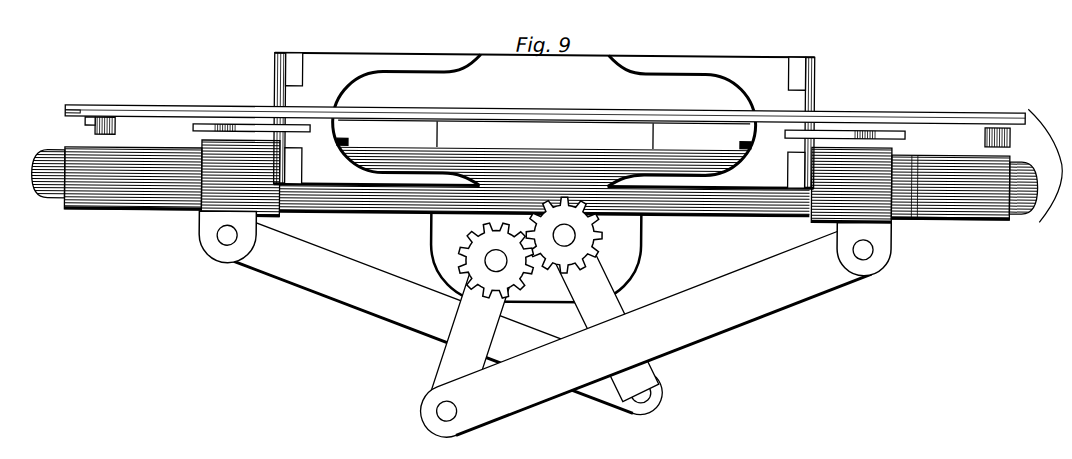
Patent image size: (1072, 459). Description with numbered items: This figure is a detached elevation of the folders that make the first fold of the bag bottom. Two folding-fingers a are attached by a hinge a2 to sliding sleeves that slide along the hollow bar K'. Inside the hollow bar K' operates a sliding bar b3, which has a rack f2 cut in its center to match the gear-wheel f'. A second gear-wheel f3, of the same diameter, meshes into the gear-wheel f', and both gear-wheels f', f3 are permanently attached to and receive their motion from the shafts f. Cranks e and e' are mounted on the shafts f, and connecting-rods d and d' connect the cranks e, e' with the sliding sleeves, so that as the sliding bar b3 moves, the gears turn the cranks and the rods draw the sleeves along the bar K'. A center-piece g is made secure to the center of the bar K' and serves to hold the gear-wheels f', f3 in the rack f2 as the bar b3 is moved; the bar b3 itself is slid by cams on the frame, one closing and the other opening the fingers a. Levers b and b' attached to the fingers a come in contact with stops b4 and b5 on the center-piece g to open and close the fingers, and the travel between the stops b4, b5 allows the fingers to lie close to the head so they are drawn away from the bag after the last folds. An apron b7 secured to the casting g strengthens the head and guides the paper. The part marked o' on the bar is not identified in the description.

The folding-fingers a is at (544, 121).
The hinge a2 is at (547, 109).
The lever b is at (252, 99).
The lever b' is at (845, 103).
The sliding bar b3 is at (534, 161).
The stop b4 is at (563, 135).
The stop b5 is at (225, 125).
The apron b7 is at (545, 100).
The center-piece g is at (73, 120).
The slot o' is at (544, 134).
The hollow bar K' is at (544, 134).
The shafts f is at (530, 246).
The gear-wheel f' is at (564, 235).
The rack f2 is at (536, 253).
The gear-wheel f3 is at (495, 260).
The connecting-rod d is at (645, 331).
The connecting-rod d' is at (441, 315).
The crank e is at (602, 314).
The crank e' is at (471, 336).